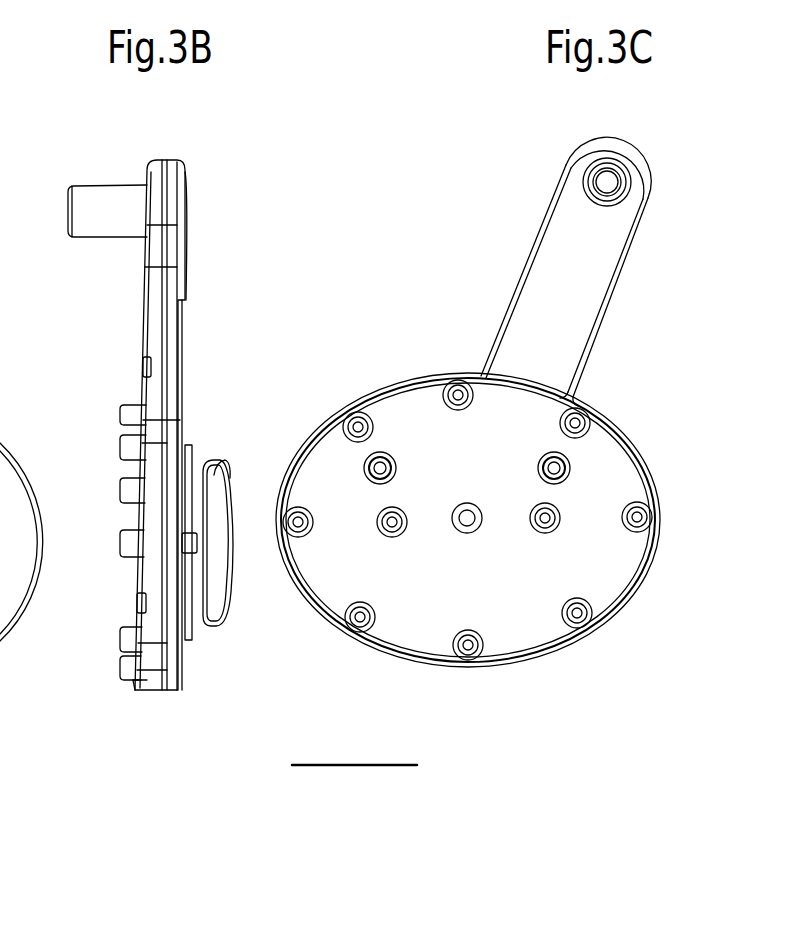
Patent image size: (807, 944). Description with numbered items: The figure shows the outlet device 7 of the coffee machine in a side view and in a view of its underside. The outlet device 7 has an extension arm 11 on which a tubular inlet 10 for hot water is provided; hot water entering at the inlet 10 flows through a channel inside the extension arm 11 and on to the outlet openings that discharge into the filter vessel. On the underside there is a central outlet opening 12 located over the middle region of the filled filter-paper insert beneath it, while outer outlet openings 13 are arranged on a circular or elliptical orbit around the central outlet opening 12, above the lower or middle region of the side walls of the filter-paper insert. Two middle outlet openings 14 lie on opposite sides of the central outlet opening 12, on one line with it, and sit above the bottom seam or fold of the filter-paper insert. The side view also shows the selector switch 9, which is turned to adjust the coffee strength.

In FIG. 3C, the outlet device 7 is at (602, 473).
In FIG. 3B, the selector switch 9 is at (222, 470).
In FIG. 3B, the tubular inlet 10 is at (93, 210).
In FIG. 3C, the tubular inlet 10 is at (630, 188).
In FIG. 3B, the extension arm 11 is at (162, 267).
In FIG. 3C, the central outlet opening 12 is at (467, 525).
In FIG. 3C, the outer outlet openings 13 is at (484, 378).
In FIG. 3C, the middle outlet openings 14 is at (545, 510).